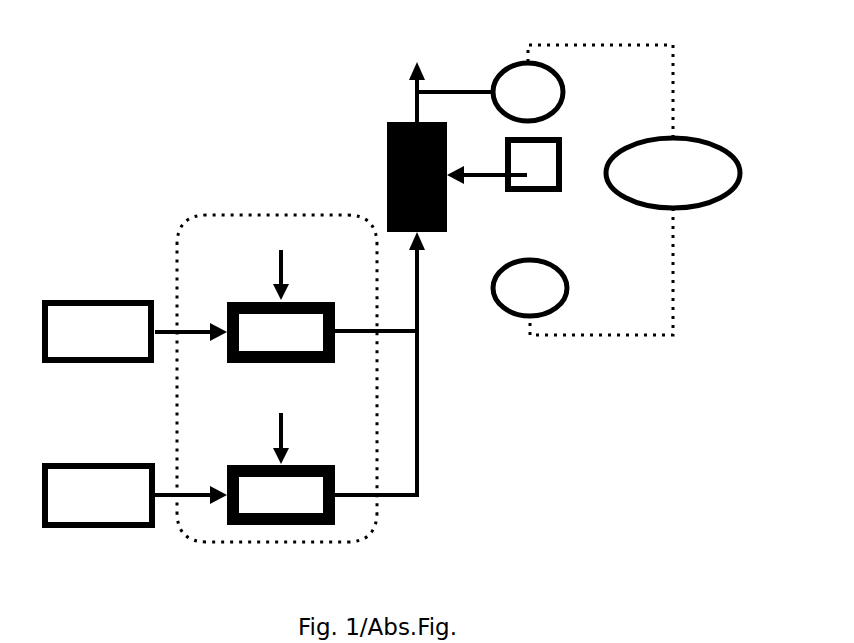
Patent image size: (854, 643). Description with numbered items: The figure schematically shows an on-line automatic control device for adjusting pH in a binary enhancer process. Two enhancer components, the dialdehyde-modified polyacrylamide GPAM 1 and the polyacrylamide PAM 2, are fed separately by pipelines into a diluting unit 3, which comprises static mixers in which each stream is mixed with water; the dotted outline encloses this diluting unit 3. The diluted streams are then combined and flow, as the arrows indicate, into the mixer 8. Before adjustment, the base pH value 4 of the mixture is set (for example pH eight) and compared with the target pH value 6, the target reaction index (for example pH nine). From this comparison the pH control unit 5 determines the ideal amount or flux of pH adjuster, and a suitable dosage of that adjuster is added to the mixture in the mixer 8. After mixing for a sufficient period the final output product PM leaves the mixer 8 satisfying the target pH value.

The dialdehyde-modified polyacrylamide GPAM 1 is at (136, 331).
The polyacrylamide PAM 2 is at (136, 495).
The diluting unit 3 is at (247, 240).
The setting base pH value 4 is at (543, 302).
The pH control unit 5 is at (634, 190).
The setting target pH value, target reaction index 6 is at (552, 95).
The mixer 8 is at (390, 152).